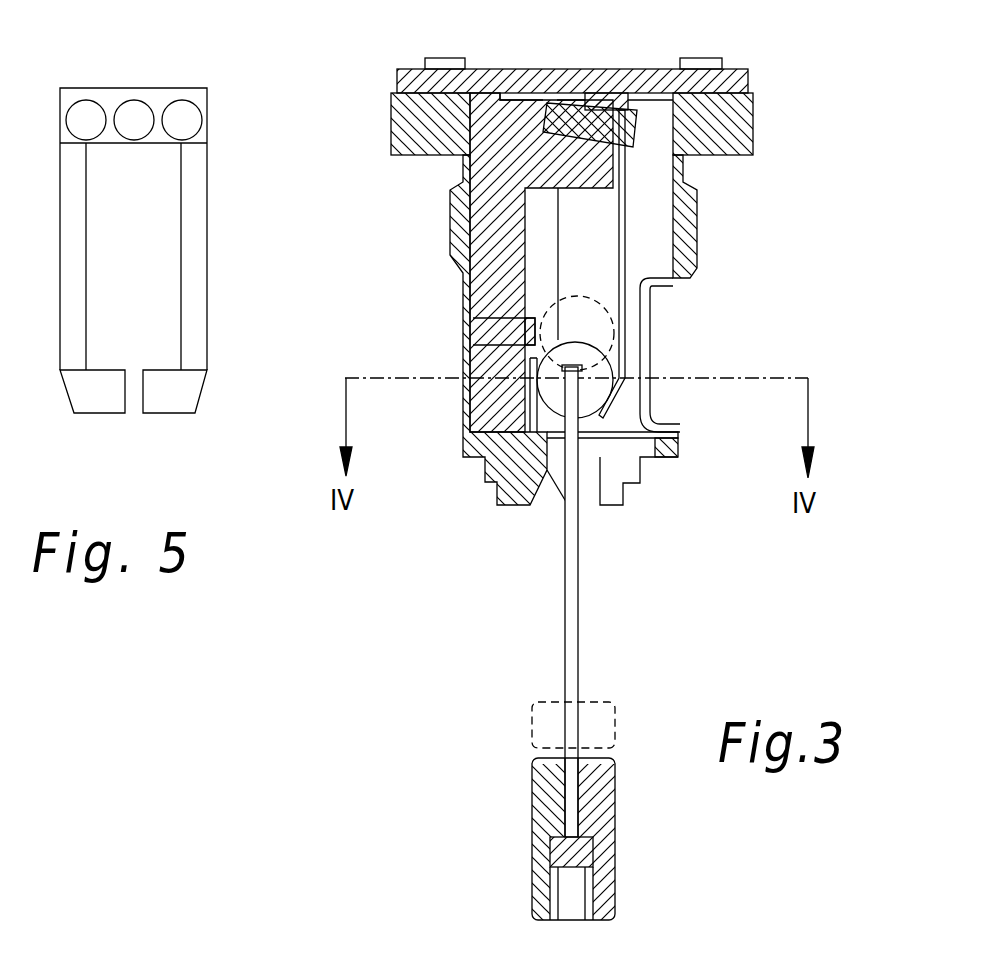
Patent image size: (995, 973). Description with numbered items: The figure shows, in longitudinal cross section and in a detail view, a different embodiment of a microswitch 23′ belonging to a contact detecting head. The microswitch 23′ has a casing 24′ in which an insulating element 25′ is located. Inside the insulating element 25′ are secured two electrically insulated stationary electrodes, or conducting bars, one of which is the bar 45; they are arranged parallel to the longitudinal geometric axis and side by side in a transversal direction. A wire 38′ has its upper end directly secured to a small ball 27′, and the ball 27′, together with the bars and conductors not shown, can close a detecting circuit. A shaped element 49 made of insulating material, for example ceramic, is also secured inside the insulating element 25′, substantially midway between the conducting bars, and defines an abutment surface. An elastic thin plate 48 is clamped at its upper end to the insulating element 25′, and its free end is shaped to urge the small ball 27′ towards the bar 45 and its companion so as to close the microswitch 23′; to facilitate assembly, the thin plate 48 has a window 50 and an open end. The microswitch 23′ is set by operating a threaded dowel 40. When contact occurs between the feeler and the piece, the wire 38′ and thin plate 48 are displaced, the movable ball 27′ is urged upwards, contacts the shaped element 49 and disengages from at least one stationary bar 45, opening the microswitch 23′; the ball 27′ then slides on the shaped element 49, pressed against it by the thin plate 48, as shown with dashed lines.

In FIG. 3, the microswitch 23′ is at (546, 52).
In FIG. 3, the casing 24′ is at (428, 155).
In FIG. 3, the insulating element 25′ is at (490, 270).
In FIG. 3, the small ball 27′ is at (612, 380).
In FIG. 3, the wire 38′ is at (573, 643).
In FIG. 3, the threaded dowel 40 is at (532, 840).
In FIG. 3, the stationary electrode (conducting bar) 45 is at (472, 428).
In FIG. 3, the elastic thin plate 48 is at (623, 325).
In FIG. 5, the elastic thin plate 48 is at (191, 348).
In FIG. 3, the shaped element 49 is at (545, 283).
In FIG. 5, the window 50 is at (135, 296).